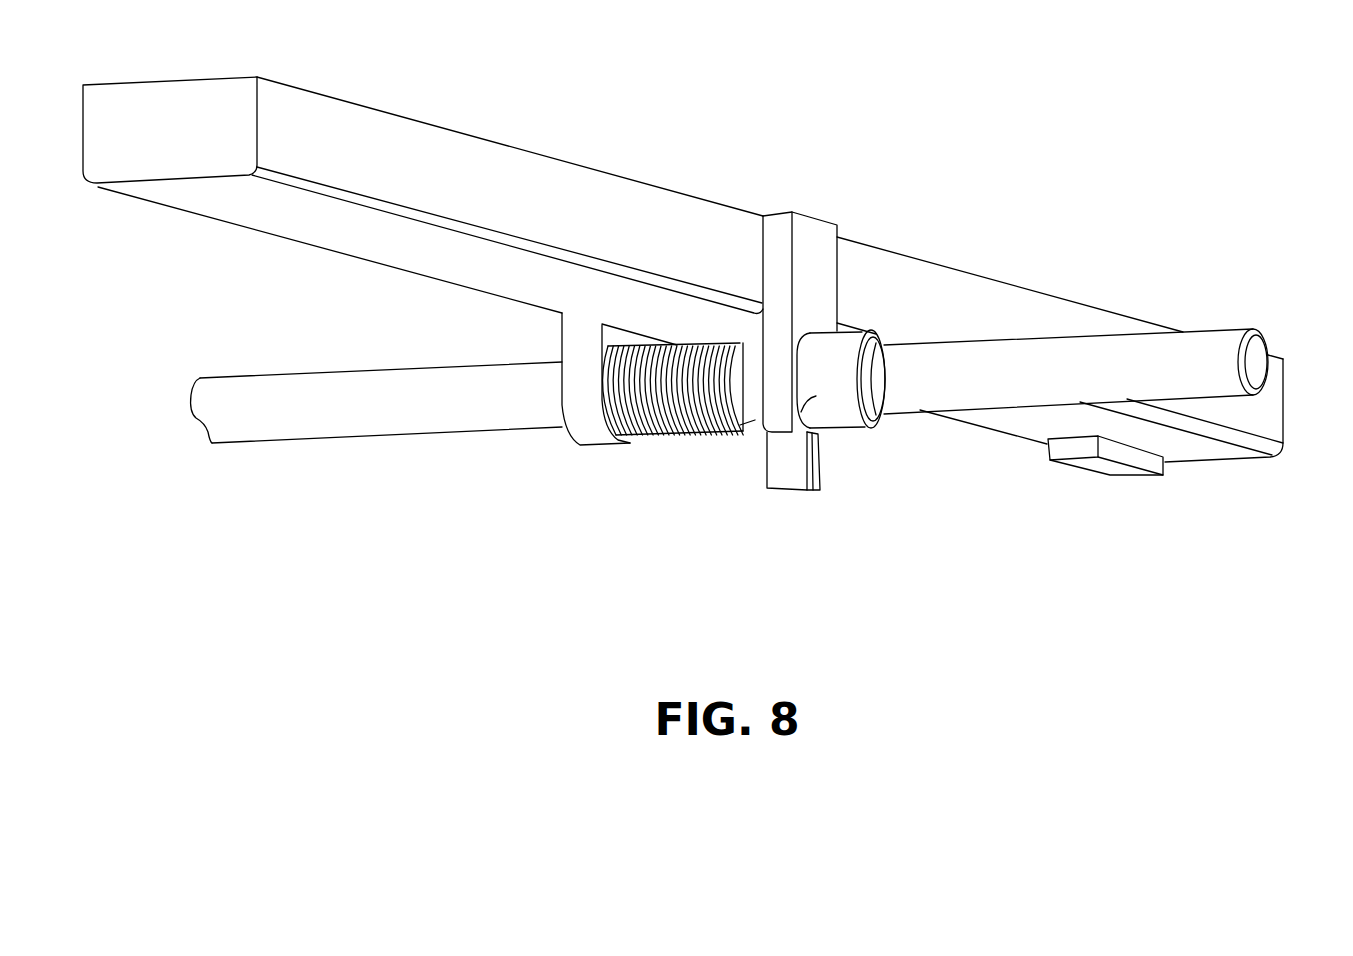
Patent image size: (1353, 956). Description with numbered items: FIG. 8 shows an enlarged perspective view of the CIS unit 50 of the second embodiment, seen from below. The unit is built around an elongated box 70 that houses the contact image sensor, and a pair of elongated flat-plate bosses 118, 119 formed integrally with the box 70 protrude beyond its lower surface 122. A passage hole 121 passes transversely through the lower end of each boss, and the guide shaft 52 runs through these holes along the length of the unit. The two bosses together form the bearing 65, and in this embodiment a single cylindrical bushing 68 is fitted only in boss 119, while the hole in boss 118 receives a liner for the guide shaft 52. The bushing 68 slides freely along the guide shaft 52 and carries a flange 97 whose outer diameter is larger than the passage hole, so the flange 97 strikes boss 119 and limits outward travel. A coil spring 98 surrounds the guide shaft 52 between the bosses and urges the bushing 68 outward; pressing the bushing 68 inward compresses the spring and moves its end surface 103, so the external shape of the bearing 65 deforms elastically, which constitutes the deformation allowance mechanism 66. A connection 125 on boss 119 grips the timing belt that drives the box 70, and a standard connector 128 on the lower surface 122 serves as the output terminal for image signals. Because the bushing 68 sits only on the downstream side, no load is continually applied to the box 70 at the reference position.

The CIS unit 50 is at (1049, 203).
The guide shaft 52 is at (283, 415).
The bearing 65 is at (557, 448).
The deformation allowance mechanism 66 is at (635, 462).
The bushing 68 is at (858, 417).
The box 70 is at (1263, 418).
The flange 97 is at (755, 420).
The coil spring 98 is at (683, 343).
The end surface 103 is at (887, 333).
The boss 118 is at (568, 334).
The boss 119 is at (811, 240).
The passage hole 121 is at (801, 412).
The lower surface 122 is at (165, 188).
The connection 125 is at (793, 478).
The connector 128 is at (1110, 471).